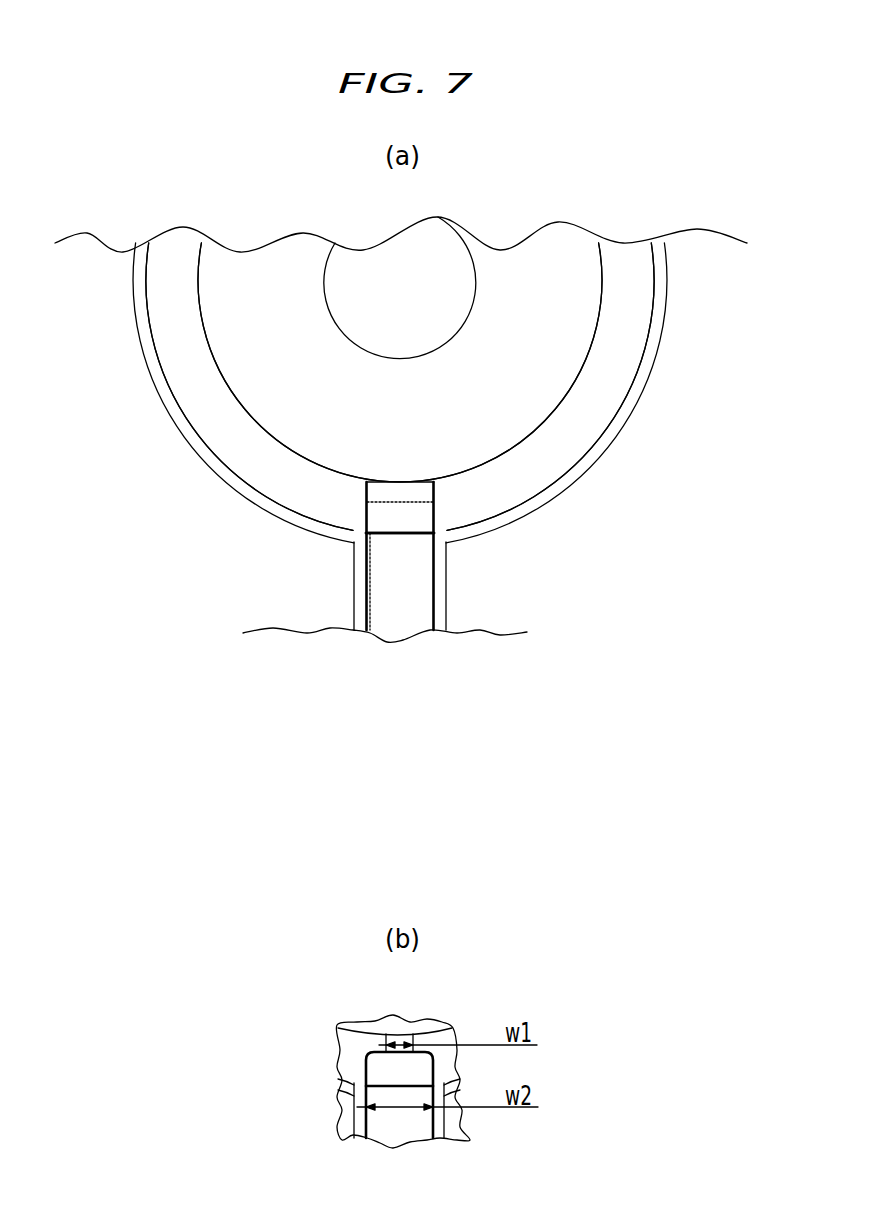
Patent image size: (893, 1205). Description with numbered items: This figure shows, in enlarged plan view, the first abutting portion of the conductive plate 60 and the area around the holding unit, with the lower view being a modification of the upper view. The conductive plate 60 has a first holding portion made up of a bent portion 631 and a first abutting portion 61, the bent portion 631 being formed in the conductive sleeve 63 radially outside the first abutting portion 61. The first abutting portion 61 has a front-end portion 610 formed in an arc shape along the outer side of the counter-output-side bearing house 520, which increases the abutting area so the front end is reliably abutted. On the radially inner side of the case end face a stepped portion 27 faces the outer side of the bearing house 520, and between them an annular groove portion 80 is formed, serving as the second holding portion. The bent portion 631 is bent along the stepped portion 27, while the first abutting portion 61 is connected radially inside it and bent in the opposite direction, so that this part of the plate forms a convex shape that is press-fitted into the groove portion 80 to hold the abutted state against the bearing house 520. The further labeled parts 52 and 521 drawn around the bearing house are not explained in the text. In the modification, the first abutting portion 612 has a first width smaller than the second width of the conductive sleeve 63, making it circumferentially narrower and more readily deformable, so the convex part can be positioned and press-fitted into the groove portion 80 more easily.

The stepped portion 27 is at (245, 485).
The partition wall 52 is at (180, 378).
The counter-output-side bearing house 520 is at (227, 385).
The outer peripheral surface of partition wall 521 is at (218, 430).
The conductive plate 60 is at (438, 574).
The first abutting portion 61 is at (425, 490).
The front-end portion 610 is at (388, 482).
The first abutting portion 612 is at (397, 1042).
The conductive sleeve 63 is at (415, 595).
The bent portion 631 is at (397, 534).
The groove portion 80 is at (495, 493).